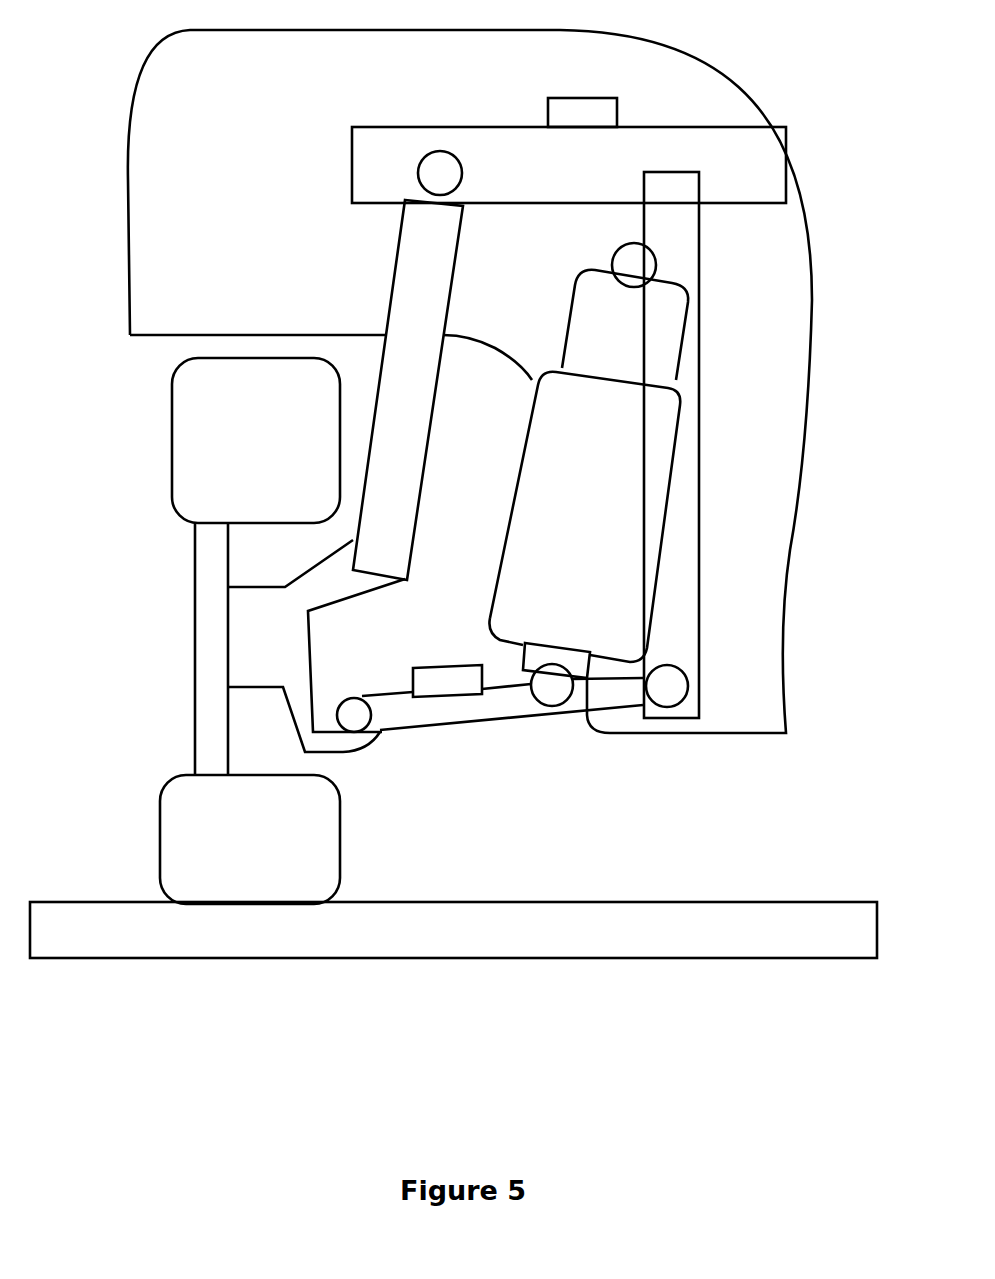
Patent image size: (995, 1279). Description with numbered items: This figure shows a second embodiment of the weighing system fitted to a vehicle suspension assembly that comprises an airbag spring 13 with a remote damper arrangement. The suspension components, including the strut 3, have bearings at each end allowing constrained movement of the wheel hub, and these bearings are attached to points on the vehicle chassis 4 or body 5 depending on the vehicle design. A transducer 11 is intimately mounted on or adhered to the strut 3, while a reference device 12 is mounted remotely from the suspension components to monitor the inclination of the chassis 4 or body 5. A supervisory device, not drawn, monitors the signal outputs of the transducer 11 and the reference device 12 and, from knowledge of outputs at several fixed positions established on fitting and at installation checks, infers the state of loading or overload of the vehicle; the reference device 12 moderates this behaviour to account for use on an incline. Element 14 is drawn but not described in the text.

The strut 3 is at (420, 722).
The chassis 4 is at (692, 245).
The body 5 is at (183, 283).
The transducer 11 is at (463, 692).
The reference device 12 is at (619, 106).
The airbag spring 13 is at (583, 513).
The tilted support bar 14 is at (415, 308).